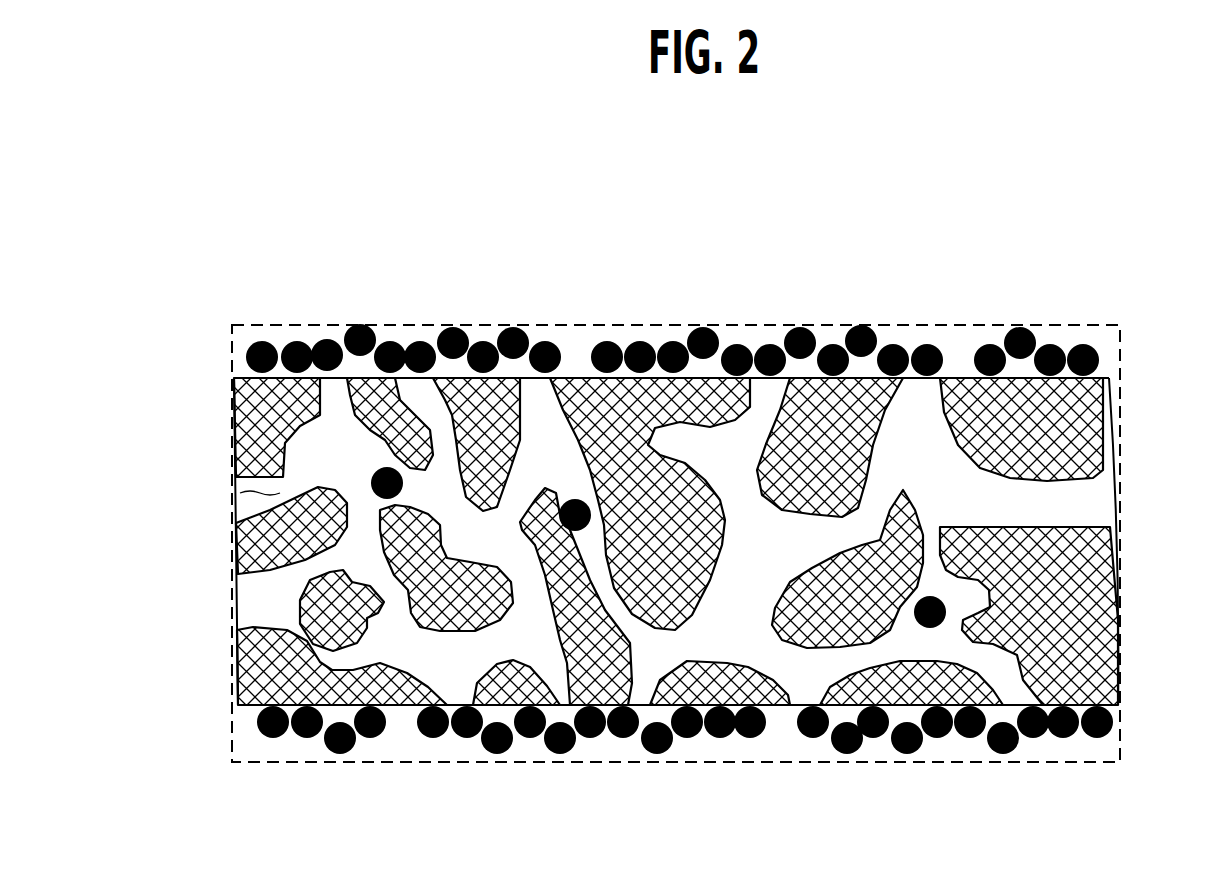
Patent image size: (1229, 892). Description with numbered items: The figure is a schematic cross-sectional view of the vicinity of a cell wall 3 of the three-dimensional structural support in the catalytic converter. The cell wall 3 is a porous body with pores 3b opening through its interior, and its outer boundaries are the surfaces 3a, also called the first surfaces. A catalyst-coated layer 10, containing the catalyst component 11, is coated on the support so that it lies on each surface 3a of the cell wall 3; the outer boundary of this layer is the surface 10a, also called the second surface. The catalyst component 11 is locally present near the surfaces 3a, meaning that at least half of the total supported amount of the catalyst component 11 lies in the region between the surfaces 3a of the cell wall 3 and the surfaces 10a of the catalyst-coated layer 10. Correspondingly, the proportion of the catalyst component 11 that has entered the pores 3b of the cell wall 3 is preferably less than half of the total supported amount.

The cell wall 3 is at (1118, 622).
The surface of the cell wall 3a is at (237, 400).
The pores of the cell wall 3b is at (237, 490).
The catalyst-coated layer 10 is at (714, 545).
The surface of the catalyst-coated layer 10a is at (617, 322).
The catalyst component 11 is at (1017, 330).